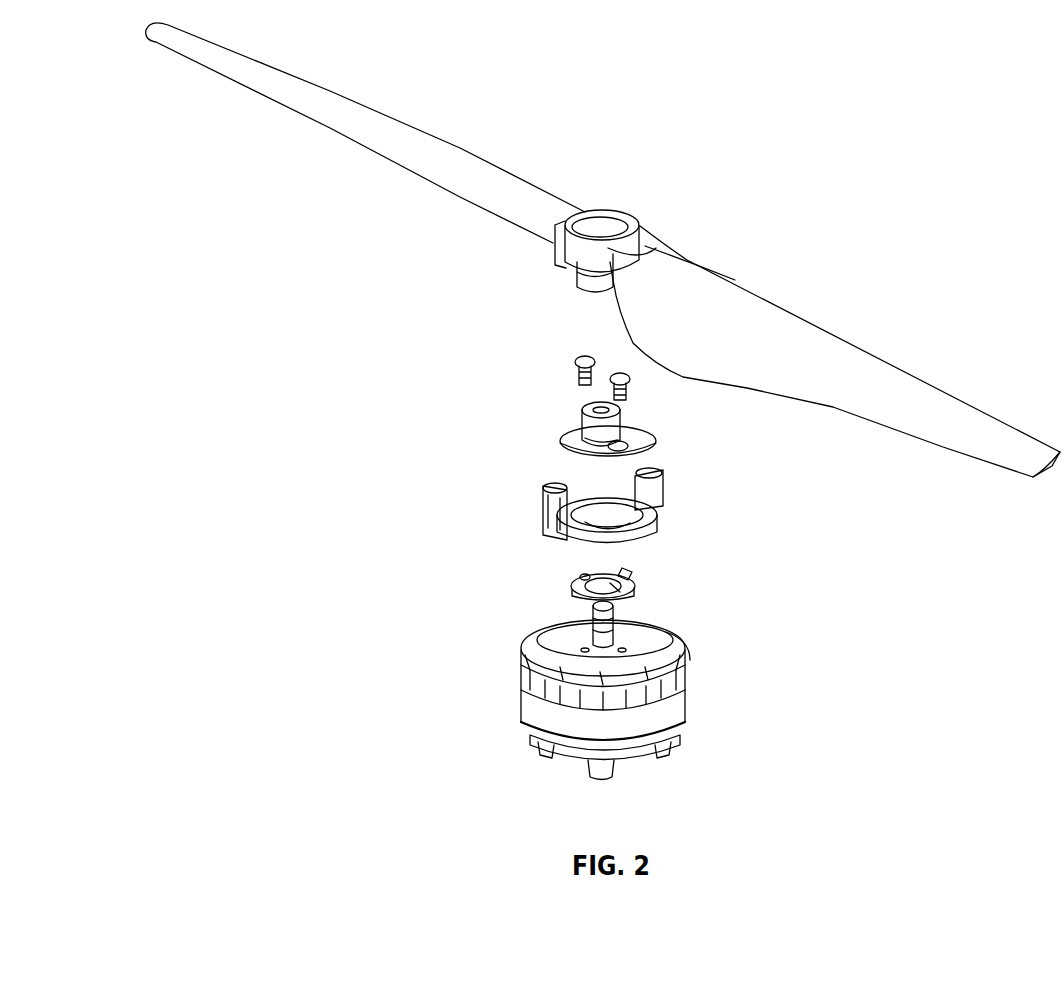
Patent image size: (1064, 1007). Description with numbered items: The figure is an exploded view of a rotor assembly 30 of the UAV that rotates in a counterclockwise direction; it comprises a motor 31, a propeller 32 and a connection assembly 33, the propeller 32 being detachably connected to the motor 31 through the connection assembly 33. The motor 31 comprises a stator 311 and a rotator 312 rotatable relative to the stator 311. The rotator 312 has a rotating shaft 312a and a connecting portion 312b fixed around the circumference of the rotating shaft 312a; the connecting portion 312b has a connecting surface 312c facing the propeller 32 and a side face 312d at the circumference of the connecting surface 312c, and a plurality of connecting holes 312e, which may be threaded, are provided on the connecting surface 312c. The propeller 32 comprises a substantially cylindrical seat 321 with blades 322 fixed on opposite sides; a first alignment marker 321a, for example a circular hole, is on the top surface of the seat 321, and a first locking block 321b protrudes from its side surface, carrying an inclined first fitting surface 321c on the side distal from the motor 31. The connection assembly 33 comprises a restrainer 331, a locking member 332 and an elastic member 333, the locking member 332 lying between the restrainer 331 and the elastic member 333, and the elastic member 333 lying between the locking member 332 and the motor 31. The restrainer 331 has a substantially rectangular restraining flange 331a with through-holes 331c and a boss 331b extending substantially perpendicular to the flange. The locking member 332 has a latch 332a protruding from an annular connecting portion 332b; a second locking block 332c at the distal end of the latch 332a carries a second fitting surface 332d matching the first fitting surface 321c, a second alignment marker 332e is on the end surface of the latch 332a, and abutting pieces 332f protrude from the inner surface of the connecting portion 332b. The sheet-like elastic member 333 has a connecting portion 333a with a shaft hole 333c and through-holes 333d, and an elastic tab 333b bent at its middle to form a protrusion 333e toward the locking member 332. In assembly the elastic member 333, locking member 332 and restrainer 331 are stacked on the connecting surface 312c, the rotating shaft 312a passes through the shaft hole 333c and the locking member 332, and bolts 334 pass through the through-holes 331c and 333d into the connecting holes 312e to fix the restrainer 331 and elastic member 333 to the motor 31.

The rotor assembly 30 is at (752, 105).
The motor 31 is at (847, 650).
The stator 311 is at (682, 738).
The rotator 312 is at (788, 630).
The rotating shaft 312a is at (612, 622).
The connecting portion 312b is at (688, 672).
The connecting surface 312c is at (550, 650).
The side face 312d is at (545, 700).
The connecting holes 312e is at (585, 637).
The propeller 32 is at (808, 242).
The seat 321 is at (640, 222).
The first alignment marker 321a is at (596, 238).
The first locking block 321b is at (587, 292).
The first fitting surface 321c is at (556, 268).
The blade 322 is at (665, 270).
The connection assembly 33 is at (845, 428).
The restrainer 331 is at (768, 438).
The restraining flange 331a is at (655, 452).
The boss 331b is at (647, 423).
The through-holes 331c is at (578, 418).
The locking member 332 is at (660, 540).
The latch 332a is at (562, 521).
The connecting portion 332b is at (562, 470).
The second locking block 332c is at (560, 481).
The second fitting surface 332d is at (663, 505).
The second alignment marker 332e is at (545, 490).
The abutting piece 332f is at (560, 548).
The elastic member 333 is at (640, 590).
The connecting portion 333a is at (574, 590).
The elastic tab 333b is at (600, 598).
The shaft hole 333c is at (625, 598).
The through-hole 333d is at (582, 580).
The protrusion 333e is at (632, 572).
The bolt 334 is at (632, 383).